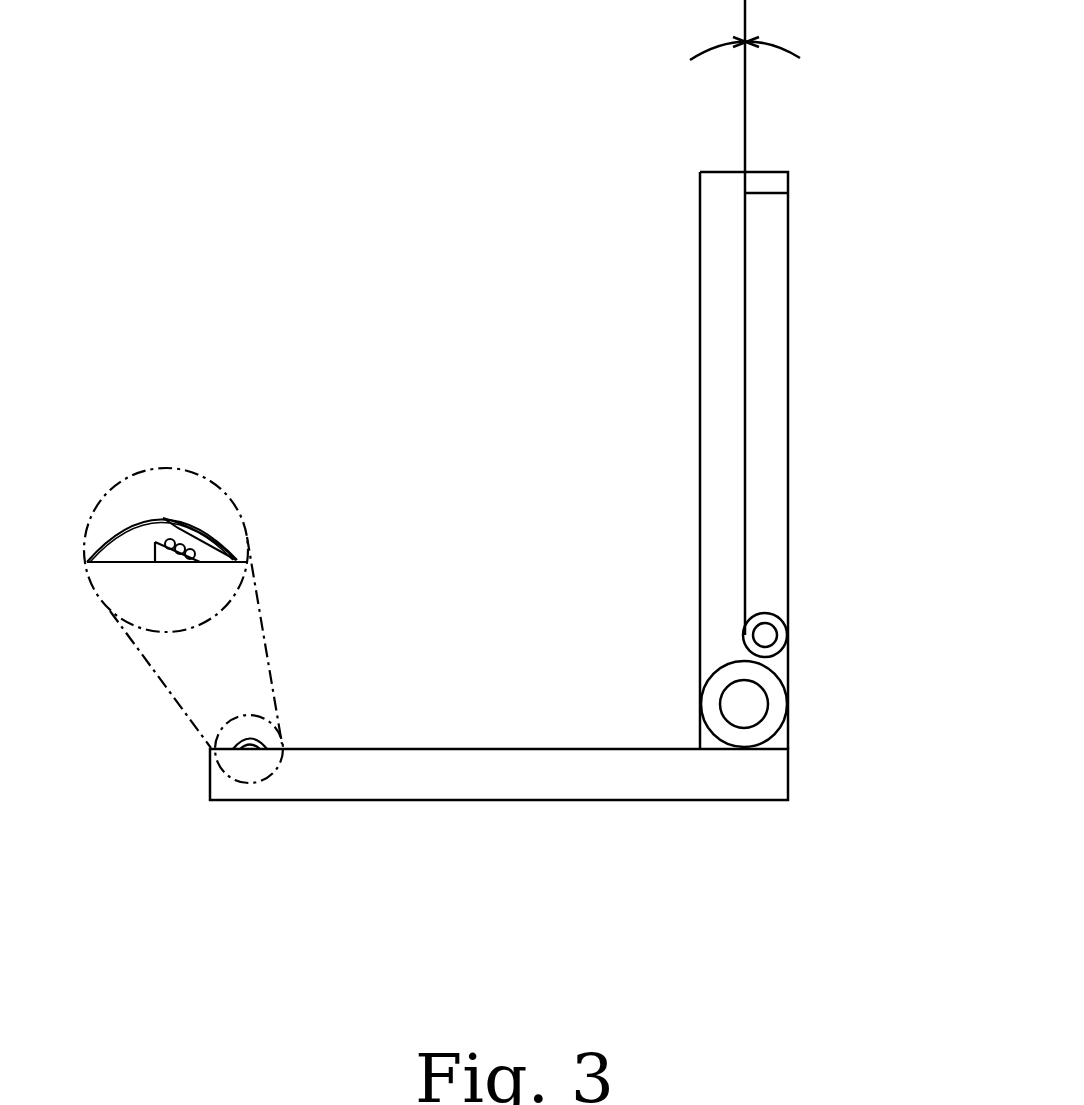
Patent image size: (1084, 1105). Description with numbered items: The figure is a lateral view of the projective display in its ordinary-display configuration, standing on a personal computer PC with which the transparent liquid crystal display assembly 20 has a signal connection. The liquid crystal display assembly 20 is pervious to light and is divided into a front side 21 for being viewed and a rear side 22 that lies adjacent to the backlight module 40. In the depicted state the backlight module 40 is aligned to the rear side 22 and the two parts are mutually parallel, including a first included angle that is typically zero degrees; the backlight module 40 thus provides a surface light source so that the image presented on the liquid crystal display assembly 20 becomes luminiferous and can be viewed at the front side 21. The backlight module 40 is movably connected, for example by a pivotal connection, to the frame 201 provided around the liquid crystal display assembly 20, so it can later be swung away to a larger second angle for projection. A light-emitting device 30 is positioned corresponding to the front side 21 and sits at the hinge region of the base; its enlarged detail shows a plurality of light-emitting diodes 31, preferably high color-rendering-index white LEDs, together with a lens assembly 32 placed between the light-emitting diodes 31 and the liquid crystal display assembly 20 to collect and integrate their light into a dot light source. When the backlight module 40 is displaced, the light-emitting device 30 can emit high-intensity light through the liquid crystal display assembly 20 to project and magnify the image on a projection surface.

The liquid crystal display assembly 20 is at (717, 460).
The front side 21 is at (700, 437).
The rear side 22 is at (745, 392).
The backlight module 40 is at (777, 448).
The frame 201 is at (710, 640).
The light-emitting device 30 is at (203, 611).
The light-emitting diodes 31 is at (205, 530).
The lens assembly 32 is at (187, 517).
The portable computer base PC is at (645, 773).